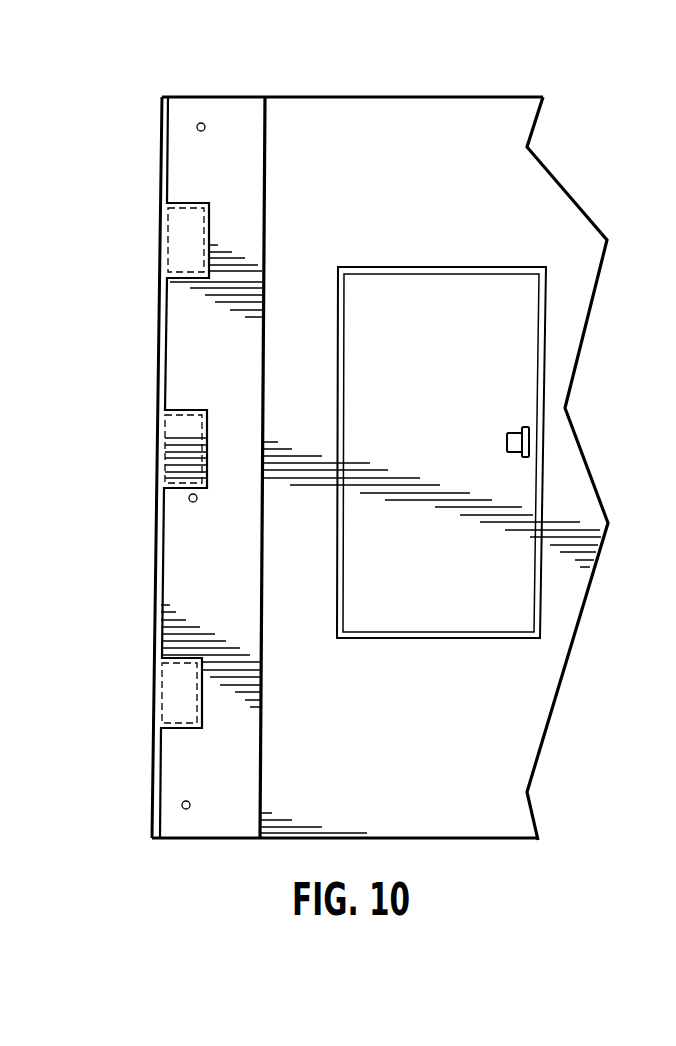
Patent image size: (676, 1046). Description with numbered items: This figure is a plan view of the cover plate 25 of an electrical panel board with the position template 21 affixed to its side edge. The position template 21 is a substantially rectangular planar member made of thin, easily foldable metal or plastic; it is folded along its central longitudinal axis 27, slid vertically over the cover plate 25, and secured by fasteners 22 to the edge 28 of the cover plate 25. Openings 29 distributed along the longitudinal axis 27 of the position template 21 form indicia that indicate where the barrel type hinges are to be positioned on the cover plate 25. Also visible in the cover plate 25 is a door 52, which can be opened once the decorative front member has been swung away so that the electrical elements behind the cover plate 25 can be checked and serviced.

The position template 21 is at (231, 91).
The fasteners 22 is at (196, 126).
The cover plate 25 is at (432, 127).
The longitudinal axis 27 is at (166, 327).
The edge 28 is at (166, 472).
The openings 29 is at (187, 232).
The door 52 is at (507, 358).